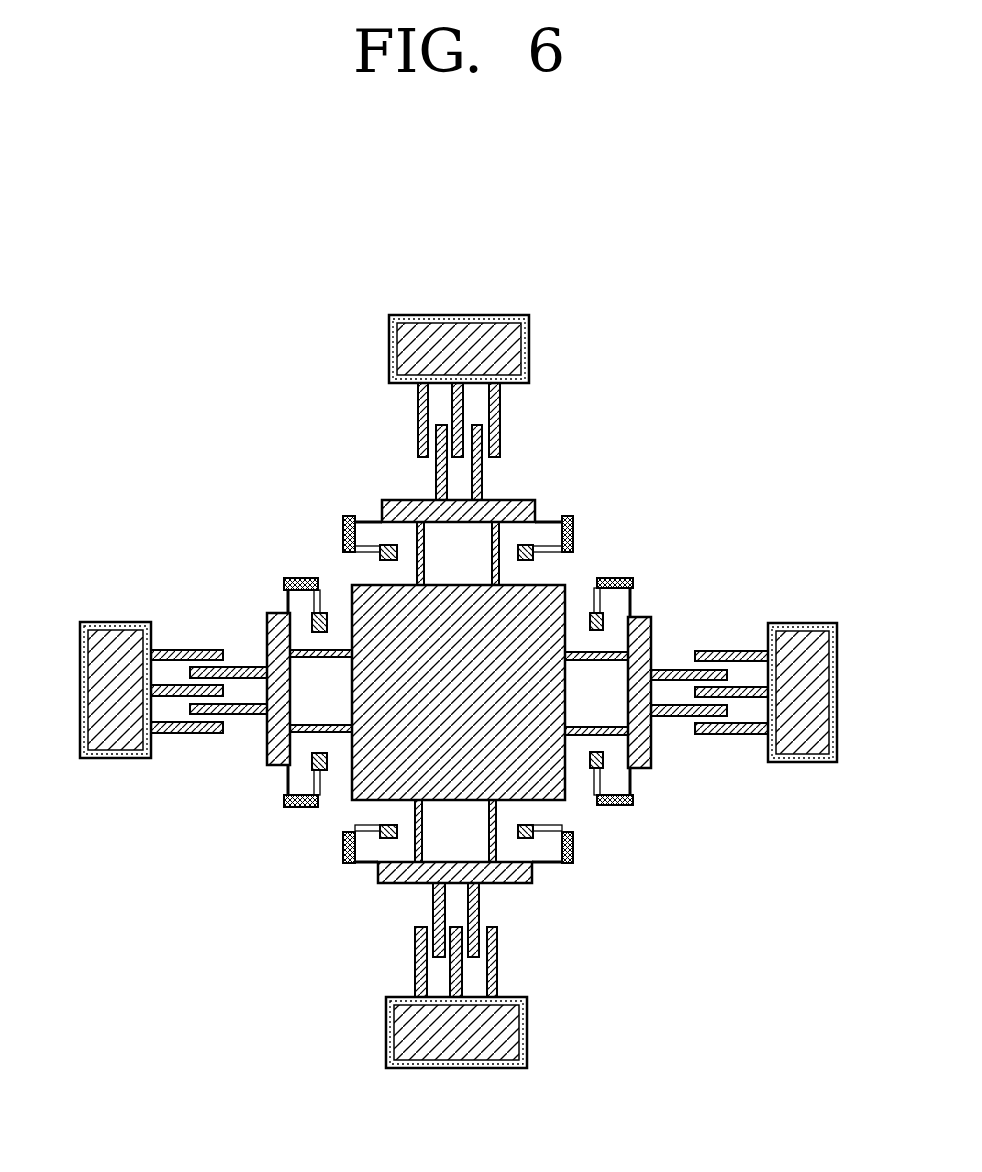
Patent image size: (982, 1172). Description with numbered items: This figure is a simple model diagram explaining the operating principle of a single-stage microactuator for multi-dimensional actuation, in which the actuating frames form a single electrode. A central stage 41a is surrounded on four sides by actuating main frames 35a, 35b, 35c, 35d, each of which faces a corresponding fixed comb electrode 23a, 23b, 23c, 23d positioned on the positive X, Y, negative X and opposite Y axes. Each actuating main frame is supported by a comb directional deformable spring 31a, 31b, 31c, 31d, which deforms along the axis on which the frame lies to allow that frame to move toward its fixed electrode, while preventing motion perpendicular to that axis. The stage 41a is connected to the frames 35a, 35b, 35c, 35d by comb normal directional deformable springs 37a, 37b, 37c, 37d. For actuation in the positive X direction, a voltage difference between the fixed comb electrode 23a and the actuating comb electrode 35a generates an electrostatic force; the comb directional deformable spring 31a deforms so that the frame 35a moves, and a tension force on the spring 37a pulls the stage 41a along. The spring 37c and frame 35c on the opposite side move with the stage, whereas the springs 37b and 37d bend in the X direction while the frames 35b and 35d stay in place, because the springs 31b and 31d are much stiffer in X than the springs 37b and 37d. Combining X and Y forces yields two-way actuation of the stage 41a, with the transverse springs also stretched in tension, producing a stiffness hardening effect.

The stage 41a is at (572, 593).
The fixed comb electrode 23a is at (808, 742).
The fixed comb electrode 23b is at (510, 1035).
The fixed comb electrode 23c is at (92, 752).
The fixed comb electrode 23d is at (510, 345).
The actuating main frame 35a is at (645, 770).
The actuating main frame 35b is at (385, 868).
The actuating main frame 35c is at (268, 637).
The actuating main frame 35d is at (397, 510).
The comb normal directional deformable spring 37a is at (615, 737).
The comb normal directional deformable spring 37b is at (413, 838).
The comb normal directional deformable spring 37c is at (305, 732).
The comb normal directional deformable spring 37d is at (417, 575).
The comb directional deformable spring 31a is at (632, 600).
The comb directional deformable spring 31b is at (550, 865).
The comb directional deformable spring 31c is at (287, 783).
The comb directional deformable spring 31d is at (548, 515).